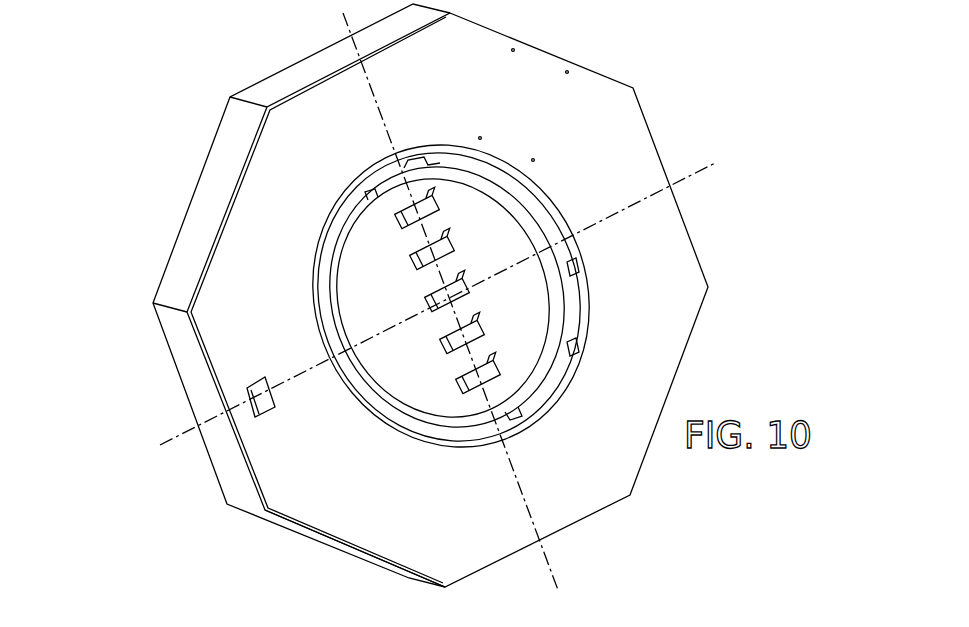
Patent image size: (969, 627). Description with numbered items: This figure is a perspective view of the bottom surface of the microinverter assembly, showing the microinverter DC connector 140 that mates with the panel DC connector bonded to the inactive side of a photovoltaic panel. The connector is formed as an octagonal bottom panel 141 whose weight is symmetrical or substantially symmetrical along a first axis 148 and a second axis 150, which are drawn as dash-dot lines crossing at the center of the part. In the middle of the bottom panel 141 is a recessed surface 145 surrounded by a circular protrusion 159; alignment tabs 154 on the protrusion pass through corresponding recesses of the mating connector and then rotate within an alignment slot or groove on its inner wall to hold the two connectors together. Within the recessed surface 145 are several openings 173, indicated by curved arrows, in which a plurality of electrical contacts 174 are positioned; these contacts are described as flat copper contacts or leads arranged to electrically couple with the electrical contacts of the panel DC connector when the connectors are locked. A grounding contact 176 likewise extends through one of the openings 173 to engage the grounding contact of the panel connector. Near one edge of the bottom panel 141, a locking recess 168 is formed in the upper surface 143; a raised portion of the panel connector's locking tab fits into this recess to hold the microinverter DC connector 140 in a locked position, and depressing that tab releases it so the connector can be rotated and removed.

The microinverter DC connector 140 is at (130, 246).
The bottom panel 141 is at (260, 200).
The upper surface 143 is at (368, 523).
The recessed surface 145 is at (510, 250).
The axis 148 is at (702, 176).
The axis 150 is at (552, 572).
The alignment tabs 154 is at (412, 172).
The circular protrusion 159 is at (553, 303).
The locking recess 168 is at (265, 428).
The openings 173 is at (418, 309).
The electrical contacts 174 is at (428, 203).
The grounding contact 176 is at (488, 372).